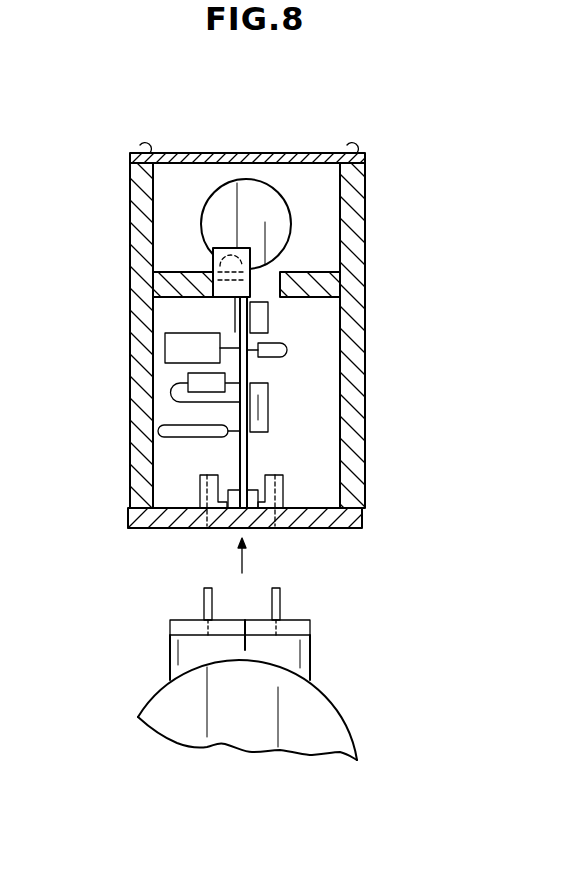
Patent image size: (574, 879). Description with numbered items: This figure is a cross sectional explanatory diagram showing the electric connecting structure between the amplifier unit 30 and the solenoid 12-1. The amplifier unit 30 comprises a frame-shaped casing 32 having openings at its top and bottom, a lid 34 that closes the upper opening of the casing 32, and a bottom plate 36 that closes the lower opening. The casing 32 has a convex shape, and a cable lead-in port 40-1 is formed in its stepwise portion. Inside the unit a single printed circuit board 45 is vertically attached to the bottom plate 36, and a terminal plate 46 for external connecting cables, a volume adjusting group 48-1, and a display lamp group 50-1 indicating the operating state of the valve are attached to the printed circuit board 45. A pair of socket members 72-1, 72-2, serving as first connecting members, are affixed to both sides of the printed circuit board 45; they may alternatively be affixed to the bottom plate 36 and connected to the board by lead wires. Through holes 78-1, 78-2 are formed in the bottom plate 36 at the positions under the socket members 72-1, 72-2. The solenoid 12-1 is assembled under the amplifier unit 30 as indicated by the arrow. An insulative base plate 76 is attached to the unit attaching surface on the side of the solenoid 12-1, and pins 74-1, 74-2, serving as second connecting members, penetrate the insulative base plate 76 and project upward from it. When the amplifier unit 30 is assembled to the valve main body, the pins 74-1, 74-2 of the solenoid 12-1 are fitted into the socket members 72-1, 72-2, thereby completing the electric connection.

The solenoid 12-1 is at (335, 737).
The amplifier unit 30 is at (128, 343).
The casing 32 is at (133, 285).
The lid 34 is at (327, 153).
The bottom plate 36 is at (355, 518).
The cable lead-in port 40-1 is at (291, 240).
The printed circuit board 45 is at (247, 465).
The terminal plate 46 is at (213, 258).
The volume adjusting group 48-1 is at (268, 323).
The display lamp group 50-1 is at (288, 350).
The socket member 72-1 is at (200, 492).
The socket member 72-2 is at (284, 500).
The pin 74-1 is at (204, 598).
The pin 74-2 is at (280, 605).
The insulative base plate 76 is at (310, 628).
The through hole 78-1 is at (207, 510).
The through hole 78-2 is at (275, 508).